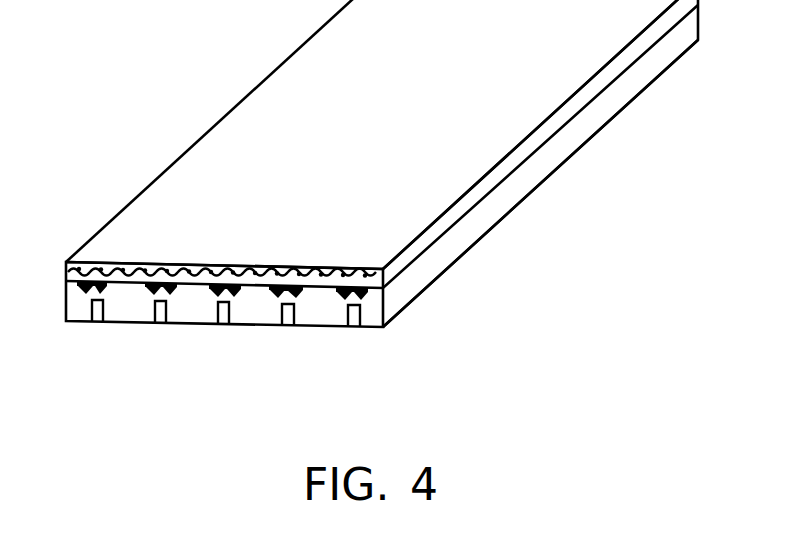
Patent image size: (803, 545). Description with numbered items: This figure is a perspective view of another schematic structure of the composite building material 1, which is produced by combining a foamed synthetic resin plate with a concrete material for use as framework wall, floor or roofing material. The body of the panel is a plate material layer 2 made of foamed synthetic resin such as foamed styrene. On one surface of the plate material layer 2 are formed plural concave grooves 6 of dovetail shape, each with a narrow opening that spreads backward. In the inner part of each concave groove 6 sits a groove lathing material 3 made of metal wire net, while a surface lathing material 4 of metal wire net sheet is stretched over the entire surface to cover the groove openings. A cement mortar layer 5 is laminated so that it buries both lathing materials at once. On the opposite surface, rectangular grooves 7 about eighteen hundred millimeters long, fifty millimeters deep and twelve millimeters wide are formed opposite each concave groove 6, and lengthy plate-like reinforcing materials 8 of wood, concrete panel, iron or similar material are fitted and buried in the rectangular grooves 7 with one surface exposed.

The composite building material 1 is at (200, 73).
The plate material layer 2 is at (480, 223).
The groove lathing material 3 is at (177, 293).
The surface lathing material 4 is at (122, 281).
The cement mortar layer 5 is at (553, 127).
The concave groove 6 is at (307, 288).
The rectangular groove 7 is at (283, 290).
The reinforcing material 8 is at (230, 311).